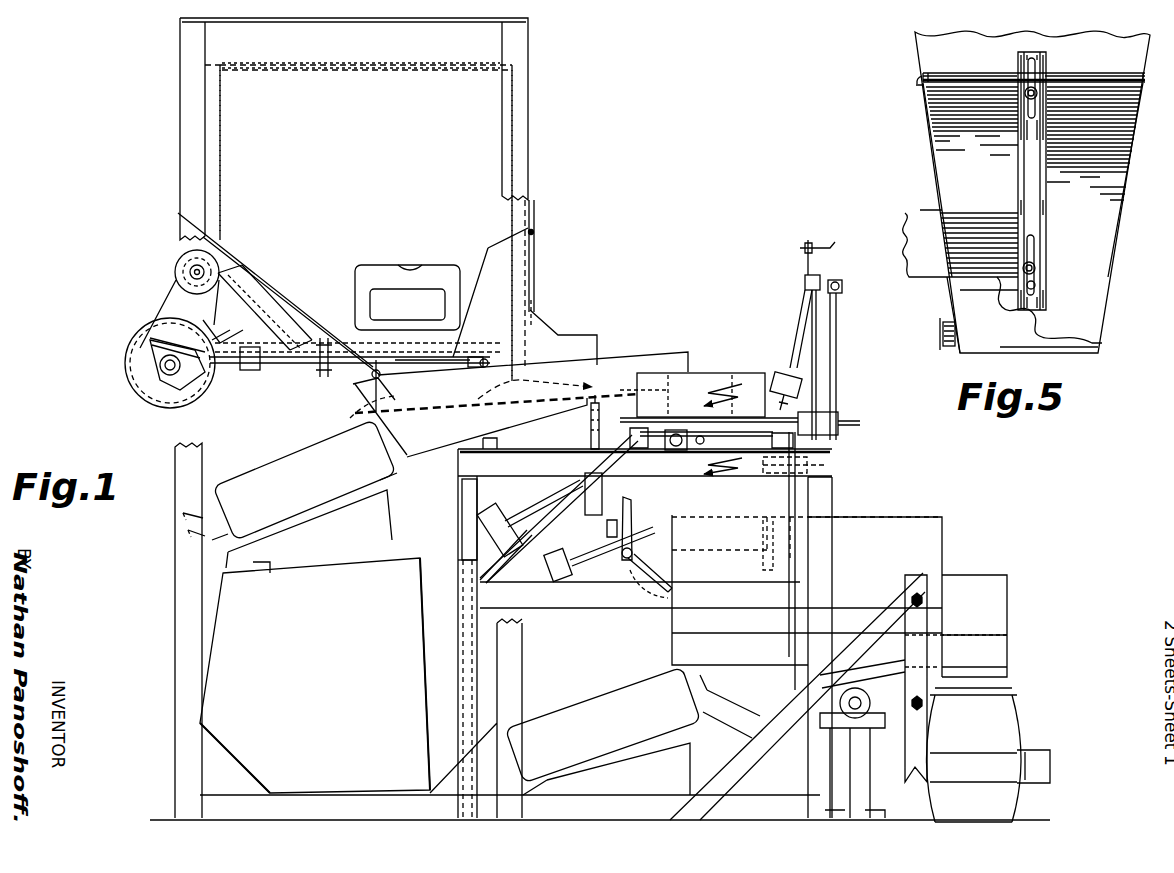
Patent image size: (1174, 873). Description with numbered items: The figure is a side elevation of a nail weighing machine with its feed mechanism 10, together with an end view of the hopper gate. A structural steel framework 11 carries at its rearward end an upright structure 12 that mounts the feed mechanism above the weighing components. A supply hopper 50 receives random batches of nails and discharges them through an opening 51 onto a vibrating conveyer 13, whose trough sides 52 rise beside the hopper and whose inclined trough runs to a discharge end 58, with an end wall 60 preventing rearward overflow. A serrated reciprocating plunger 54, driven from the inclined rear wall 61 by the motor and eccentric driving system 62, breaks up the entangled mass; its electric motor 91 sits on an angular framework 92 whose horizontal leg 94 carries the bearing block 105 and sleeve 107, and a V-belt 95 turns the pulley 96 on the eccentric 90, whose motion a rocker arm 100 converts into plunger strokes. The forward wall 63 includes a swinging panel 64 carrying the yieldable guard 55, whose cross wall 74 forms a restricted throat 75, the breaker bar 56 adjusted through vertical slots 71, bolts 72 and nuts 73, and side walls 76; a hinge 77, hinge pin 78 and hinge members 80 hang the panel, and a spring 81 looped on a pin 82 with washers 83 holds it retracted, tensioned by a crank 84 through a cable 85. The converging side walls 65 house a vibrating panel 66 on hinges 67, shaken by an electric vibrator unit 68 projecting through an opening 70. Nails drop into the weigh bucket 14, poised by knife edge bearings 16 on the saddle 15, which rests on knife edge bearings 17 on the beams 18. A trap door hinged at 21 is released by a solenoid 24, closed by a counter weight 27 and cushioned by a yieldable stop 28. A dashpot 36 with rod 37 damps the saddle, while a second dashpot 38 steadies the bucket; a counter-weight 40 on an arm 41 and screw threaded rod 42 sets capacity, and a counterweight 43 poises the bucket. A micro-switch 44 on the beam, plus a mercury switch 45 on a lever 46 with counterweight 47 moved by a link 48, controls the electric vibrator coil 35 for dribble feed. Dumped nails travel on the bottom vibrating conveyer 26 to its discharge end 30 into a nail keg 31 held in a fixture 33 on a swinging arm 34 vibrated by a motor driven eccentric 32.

In FIG. 1, the feed mechanism 10 is at (178, 104).
In FIG. 1, the structural steel framework 11 is at (835, 497).
In FIG. 1, the upright structure 12 is at (180, 190).
In FIG. 1, the vibrating conveyer 13 is at (618, 362).
In FIG. 1, the weigh bucket 14 is at (737, 382).
In FIG. 1, the saddle 15 is at (748, 430).
In FIG. 1, the knife edge bearings 16 is at (700, 468).
In FIG. 1, the knife edge bearings 17 is at (670, 472).
In FIG. 1, the beams 18 is at (545, 457).
In FIG. 1, the hinge 21 is at (625, 555).
In FIG. 1, the solenoid 24 is at (825, 470).
In FIG. 1, the bottom vibrating conveyer 26 is at (685, 650).
In FIG. 1, the counter weight 27 is at (540, 555).
In FIG. 1, the yieldable stop 28 is at (668, 580).
In FIG. 1, the discharge end 30 is at (1005, 683).
In FIG. 1, the nail keg 31 is at (1000, 715).
In FIG. 1, the motor driven eccentric 32 is at (865, 735).
In FIG. 1, the fixture 33 is at (1030, 780).
In FIG. 1, the swinging arm 34 is at (915, 655).
In FIG. 1, the electric vibrator coil 35 is at (275, 460).
In FIG. 1, the dashpot 36 is at (760, 770).
In FIG. 1, the rod 37 is at (800, 566).
In FIG. 1, the second dashpot 38 is at (590, 503).
In FIG. 1, the counter-weight 40 is at (468, 545).
In FIG. 1, the arm 41 is at (530, 488).
In FIG. 1, the screw threaded rod 42 is at (522, 515).
In FIG. 1, the counterweight 43 is at (838, 430).
In FIG. 1, the micro-switch 44 is at (642, 418).
In FIG. 1, the mercury switch 45 is at (806, 250).
In FIG. 1, the lever 46 is at (818, 278).
In FIG. 1, the counterweight 47 is at (785, 358).
In FIG. 1, the link 48 is at (836, 348).
In FIG. 1, the supply hopper 50 is at (475, 157).
In FIG. 1, the opening 51 is at (500, 392).
In FIG. 1, the sides of the conveyer trough 52 is at (393, 416).
In FIG. 1, the reciprocating plunger 54 is at (290, 370).
In FIG. 1, the yieldable guard 55 is at (565, 335).
In FIG. 5, the yieldable guard 55 is at (958, 292).
In FIG. 1, the breaker bar 56 is at (542, 248).
In FIG. 5, the breaker bar 56 is at (1024, 150).
In FIG. 1, the discharge end 58 is at (692, 368).
In FIG. 1, the end wall 60 is at (360, 400).
In FIG. 1, the inclined rear wall 61 is at (292, 305).
In FIG. 1, the motor and eccentric driving system 62 is at (125, 350).
In FIG. 5, the forward wall 63 is at (1105, 48).
In FIG. 1, the swinging panel 64 is at (536, 272).
In FIG. 5, the swinging panel 64 is at (1075, 220).
In FIG. 5, the side walls 65 is at (915, 64).
In FIG. 1, the vibrating panel 66 is at (220, 152).
In FIG. 1, the hinges 67 is at (252, 66).
In FIG. 1, the electric vibrator unit 68 is at (385, 293).
In FIG. 5, the electric vibrator unit 68 is at (920, 212).
In FIG. 1, the opening 70 is at (405, 262).
In FIG. 5, the vertical slots 71 is at (1034, 64).
In FIG. 5, the bolts 72 is at (1028, 98).
In FIG. 5, the nuts 73 is at (1040, 286).
In FIG. 5, the cross wall 74 is at (985, 342).
In FIG. 1, the restricted throat 75 is at (497, 427).
In FIG. 1, the side walls 76 is at (495, 262).
In FIG. 5, the side walls 76 is at (928, 138).
In FIG. 5, the hinge 77 is at (950, 75).
In FIG. 5, the hinge pin 78 is at (918, 86).
In FIG. 5, the hinge members 80 is at (1002, 74).
In FIG. 1, the spring 81 is at (452, 358).
In FIG. 5, the spring 81 is at (945, 320).
In FIG. 1, the pin 82 is at (486, 352).
In FIG. 5, the pin 82 is at (936, 336).
In FIG. 5, the washers 83 is at (948, 348).
In FIG. 1, the crank 84 is at (385, 388).
In FIG. 1, the cable 85 is at (410, 358).
In FIG. 1, the eccentric 90 is at (160, 375).
In FIG. 1, the electric motor 91 is at (180, 258).
In FIG. 1, the angular framework 92 is at (242, 283).
In FIG. 1, the horizontal leg 94 is at (302, 346).
In FIG. 1, the V-belt 95 is at (165, 308).
In FIG. 1, the pulley 96 is at (127, 370).
In FIG. 1, the rocker arm 100 is at (195, 345).
In FIG. 1, the bearing block 105 is at (248, 375).
In FIG. 1, the sleeve 107 is at (345, 372).